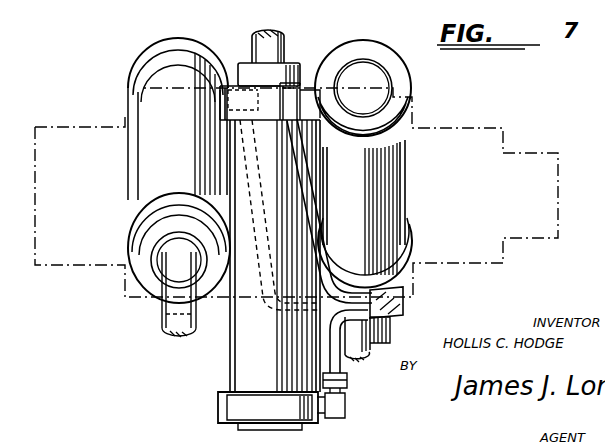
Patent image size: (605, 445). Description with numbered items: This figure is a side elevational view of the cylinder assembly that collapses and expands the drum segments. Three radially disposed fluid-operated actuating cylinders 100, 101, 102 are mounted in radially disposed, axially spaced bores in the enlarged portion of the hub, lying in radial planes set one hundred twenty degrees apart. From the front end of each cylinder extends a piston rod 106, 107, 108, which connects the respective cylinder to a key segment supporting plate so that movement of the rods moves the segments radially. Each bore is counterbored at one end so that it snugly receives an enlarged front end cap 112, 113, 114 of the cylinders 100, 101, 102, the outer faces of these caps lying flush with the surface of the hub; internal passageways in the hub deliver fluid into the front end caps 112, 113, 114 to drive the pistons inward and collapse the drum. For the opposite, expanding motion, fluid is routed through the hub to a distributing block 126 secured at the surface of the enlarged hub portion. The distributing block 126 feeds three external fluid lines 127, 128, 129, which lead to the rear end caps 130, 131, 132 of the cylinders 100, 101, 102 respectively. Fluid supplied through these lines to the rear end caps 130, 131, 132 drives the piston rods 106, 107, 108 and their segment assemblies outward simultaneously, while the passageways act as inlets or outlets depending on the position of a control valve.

The fluid-operated actuating cylinder 100 is at (150, 102).
The fluid-operated actuating cylinder 101 is at (235, 361).
The fluid-operated actuating cylinder 102 is at (392, 163).
The piston rod 106 is at (163, 313).
The piston rod 107 is at (272, 34).
The piston rod 108 is at (368, 328).
The front end cap 112 is at (137, 276).
The front end cap 113 is at (267, 93).
The front end cap 114 is at (402, 268).
The distributing block 126 is at (403, 308).
The external fluid line 127 is at (317, 312).
The external fluid line 128 is at (333, 357).
The external fluid line 129 is at (317, 223).
The rear end cap 130 is at (195, 38).
The rear end cap 131 is at (227, 402).
The rear end cap 132 is at (377, 43).